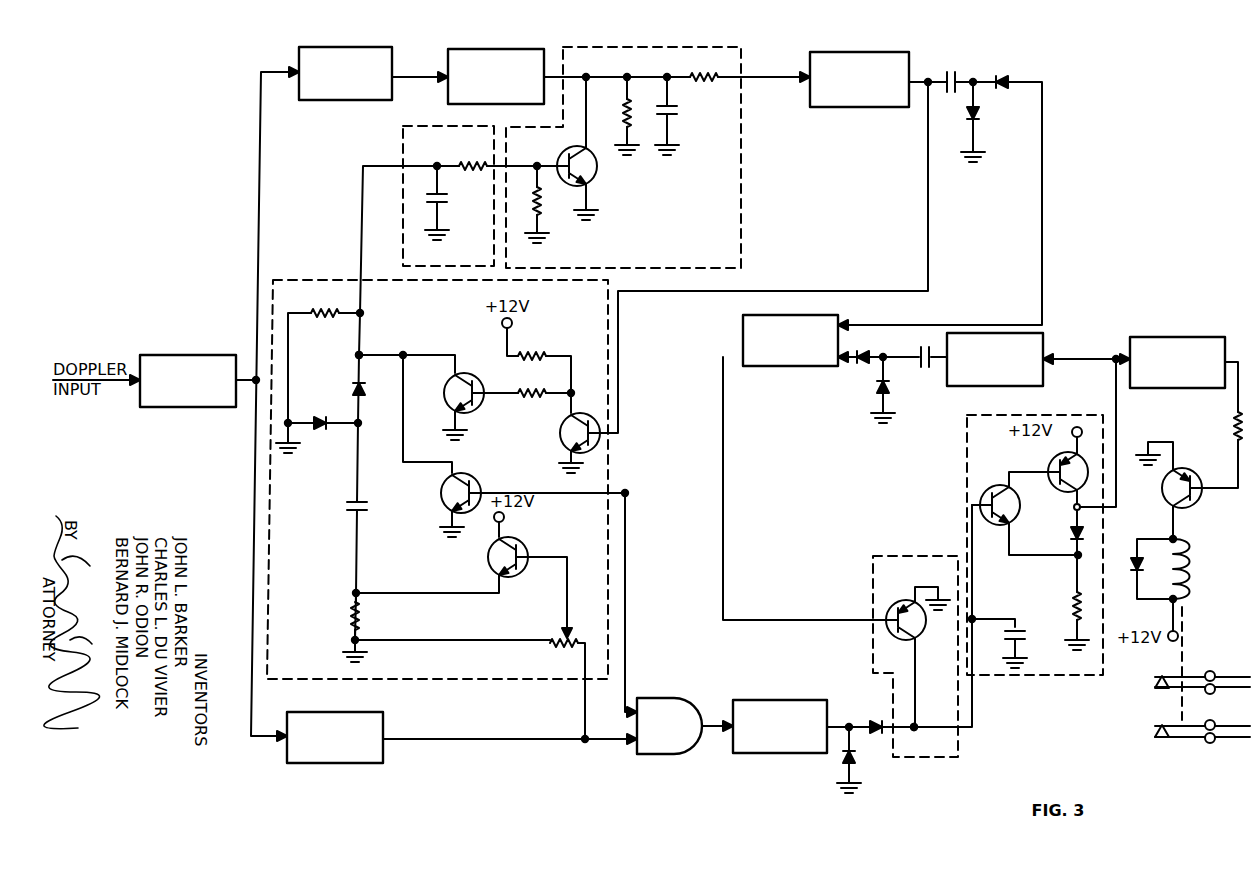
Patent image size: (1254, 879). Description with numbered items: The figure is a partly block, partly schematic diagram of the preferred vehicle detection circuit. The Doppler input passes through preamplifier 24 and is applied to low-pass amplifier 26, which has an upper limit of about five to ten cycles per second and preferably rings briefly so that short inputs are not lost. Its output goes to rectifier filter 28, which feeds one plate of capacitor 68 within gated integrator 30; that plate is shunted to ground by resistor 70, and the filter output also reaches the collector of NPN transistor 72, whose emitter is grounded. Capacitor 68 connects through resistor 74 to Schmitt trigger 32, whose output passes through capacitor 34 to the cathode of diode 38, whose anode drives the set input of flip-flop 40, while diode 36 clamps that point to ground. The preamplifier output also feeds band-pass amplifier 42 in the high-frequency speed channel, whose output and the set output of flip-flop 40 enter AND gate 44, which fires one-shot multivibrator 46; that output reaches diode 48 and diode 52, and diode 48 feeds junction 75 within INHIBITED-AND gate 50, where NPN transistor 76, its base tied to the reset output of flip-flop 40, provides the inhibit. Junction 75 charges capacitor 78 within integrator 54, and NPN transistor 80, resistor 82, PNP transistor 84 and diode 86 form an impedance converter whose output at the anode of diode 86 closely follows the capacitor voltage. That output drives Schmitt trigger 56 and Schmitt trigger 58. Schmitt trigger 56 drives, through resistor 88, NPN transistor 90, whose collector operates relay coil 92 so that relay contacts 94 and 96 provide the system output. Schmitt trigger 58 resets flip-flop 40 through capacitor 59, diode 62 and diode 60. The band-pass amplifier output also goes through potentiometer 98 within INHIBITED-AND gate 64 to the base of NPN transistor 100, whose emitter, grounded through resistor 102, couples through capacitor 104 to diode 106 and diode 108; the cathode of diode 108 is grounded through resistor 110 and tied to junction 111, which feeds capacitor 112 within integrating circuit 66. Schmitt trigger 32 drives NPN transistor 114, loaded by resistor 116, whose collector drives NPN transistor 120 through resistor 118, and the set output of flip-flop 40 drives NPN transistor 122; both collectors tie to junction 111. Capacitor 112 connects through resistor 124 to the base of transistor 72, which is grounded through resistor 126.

The preamplifier 24 is at (209, 355).
The low-pass amplifier 26 is at (362, 47).
The rectifier filter 28 is at (478, 49).
The gated integrator 30 is at (686, 47).
The Schmitt trigger 32 is at (839, 52).
The capacitor 34 is at (947, 72).
The diode 36 is at (986, 115).
The diode 38 is at (1004, 77).
The flip-flop 40 is at (770, 367).
The band-pass amplifier 42 is at (352, 764).
The AND gate 44 is at (652, 755).
The one-shot multivibrator 46 is at (777, 754).
The diode 48 is at (869, 717).
The INHIBITED-AND gate 50 is at (896, 556).
The diode 52 is at (856, 768).
The integrator 54 is at (966, 453).
The Schmitt trigger 56 is at (1144, 337).
The Schmitt trigger 58 is at (1044, 340).
The capacitor 59 is at (916, 366).
The diode 60 is at (861, 355).
The diode 62 is at (876, 383).
The INHIBITED-AND gate 64 is at (283, 280).
The integrating circuit 66 is at (448, 187).
The capacitor 68 is at (673, 113).
The resistor 70 is at (615, 116).
The NPN transistor 72 is at (593, 169).
The resistor 74 is at (715, 71).
The junction 75 is at (909, 730).
The NPN transistor 76 is at (896, 605).
The capacitor 78 is at (1022, 637).
The NPN transistor 80 is at (1003, 485).
The resistor 82 is at (1067, 610).
The PNP transistor 84 is at (1044, 464).
The diode 86 is at (1066, 539).
The resistor 88 is at (1233, 417).
The NPN transistor 90 is at (1191, 471).
The relay coil 92 is at (1187, 543).
The relay contact 94 is at (1207, 674).
The relay contact 96 is at (1207, 743).
The potentiometer 98 is at (545, 646).
The NPN transistor 100 is at (530, 540).
The resistor 102 is at (347, 610).
The capacitor 104 is at (365, 512).
The diode 106 is at (321, 430).
The diode 108 is at (346, 388).
The resistor 110 is at (325, 309).
The junction 111 is at (365, 352).
The capacitor 112 is at (442, 200).
The NPN transistor 114 is at (562, 435).
The resistor 116 is at (526, 349).
The resistor 118 is at (534, 386).
The NPN transistor 120 is at (465, 414).
The NPN transistor 122 is at (434, 494).
The resistor 124 is at (480, 156).
The resistor 126 is at (540, 221).